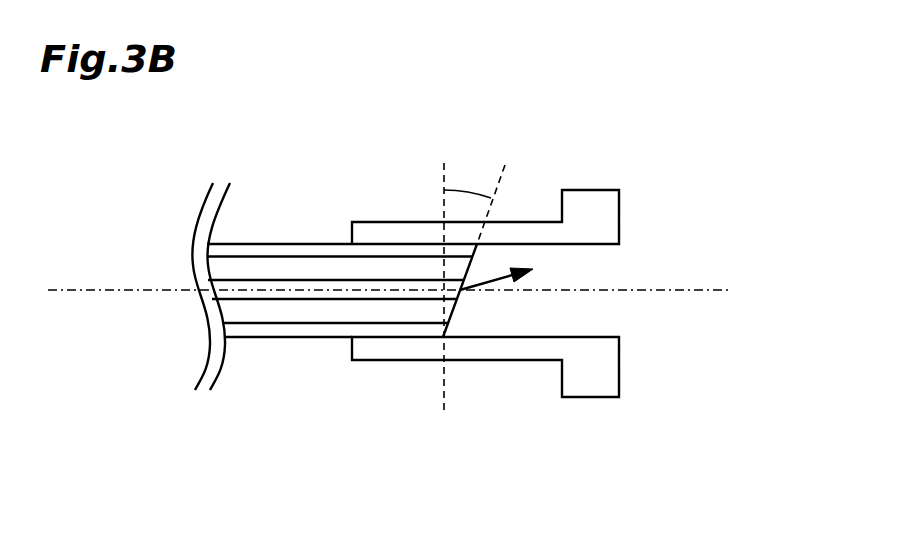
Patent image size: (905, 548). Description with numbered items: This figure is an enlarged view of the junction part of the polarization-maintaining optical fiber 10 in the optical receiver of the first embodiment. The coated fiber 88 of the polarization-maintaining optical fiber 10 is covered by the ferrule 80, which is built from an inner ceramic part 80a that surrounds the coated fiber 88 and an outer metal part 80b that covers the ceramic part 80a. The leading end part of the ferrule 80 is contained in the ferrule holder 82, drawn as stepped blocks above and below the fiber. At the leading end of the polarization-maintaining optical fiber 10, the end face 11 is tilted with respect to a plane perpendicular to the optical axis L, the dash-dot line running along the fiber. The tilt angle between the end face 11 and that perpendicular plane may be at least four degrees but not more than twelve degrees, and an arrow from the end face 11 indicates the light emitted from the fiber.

The polarization-maintaining optical fiber 10 is at (252, 368).
The ferrule 80 is at (342, 272).
The inner ceramic part 80a is at (288, 272).
The outer metal part 80b is at (322, 252).
The coated fiber 88 is at (334, 292).
The ferrule holder 82 is at (597, 190).
The end face 11 is at (460, 303).
The optical axis L is at (660, 292).